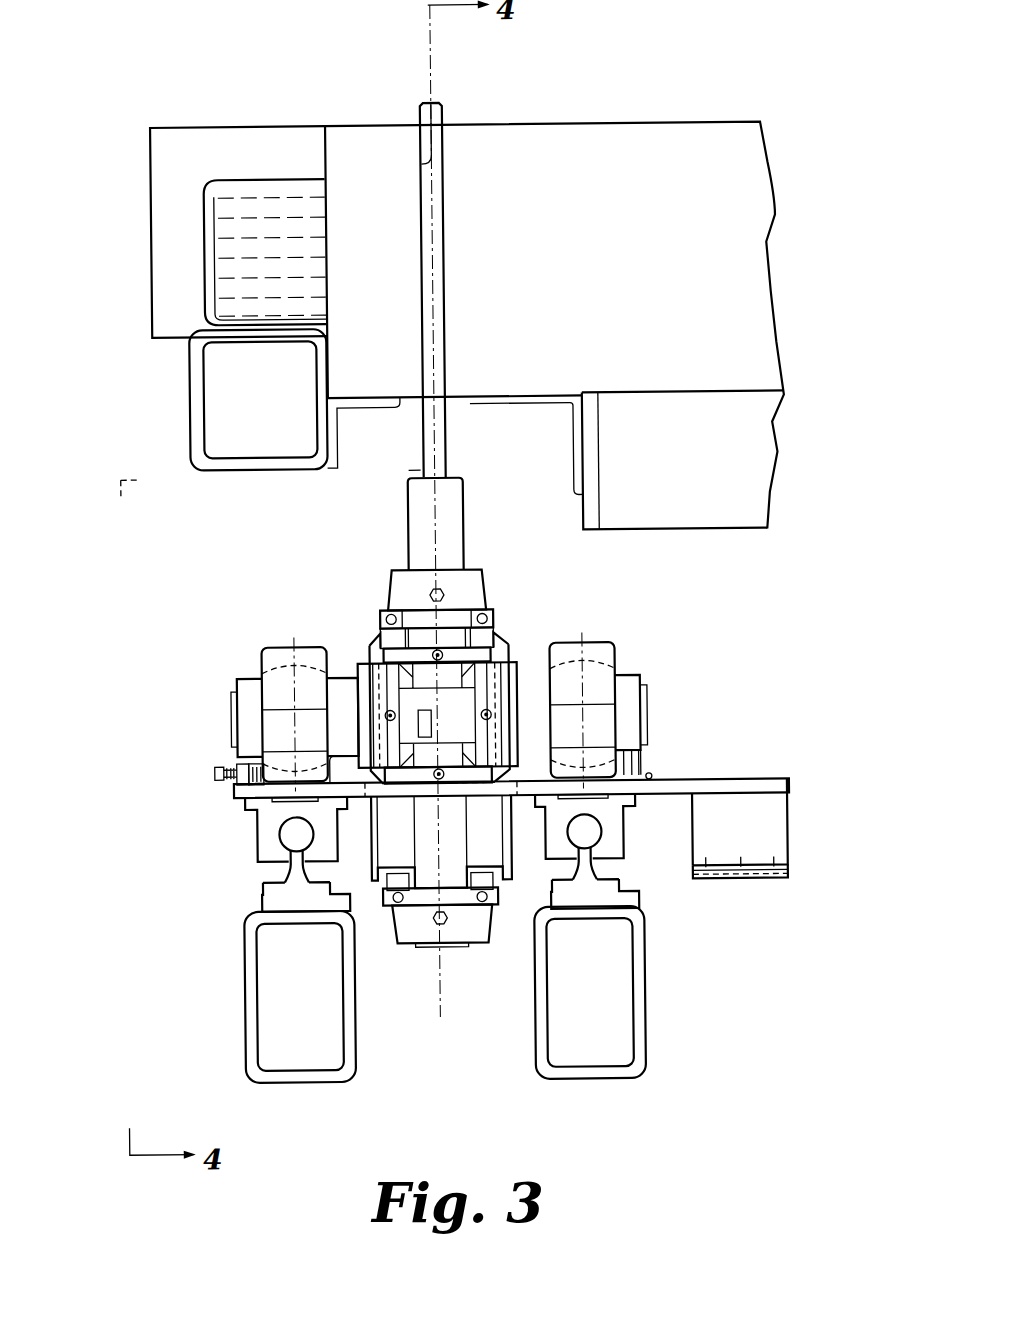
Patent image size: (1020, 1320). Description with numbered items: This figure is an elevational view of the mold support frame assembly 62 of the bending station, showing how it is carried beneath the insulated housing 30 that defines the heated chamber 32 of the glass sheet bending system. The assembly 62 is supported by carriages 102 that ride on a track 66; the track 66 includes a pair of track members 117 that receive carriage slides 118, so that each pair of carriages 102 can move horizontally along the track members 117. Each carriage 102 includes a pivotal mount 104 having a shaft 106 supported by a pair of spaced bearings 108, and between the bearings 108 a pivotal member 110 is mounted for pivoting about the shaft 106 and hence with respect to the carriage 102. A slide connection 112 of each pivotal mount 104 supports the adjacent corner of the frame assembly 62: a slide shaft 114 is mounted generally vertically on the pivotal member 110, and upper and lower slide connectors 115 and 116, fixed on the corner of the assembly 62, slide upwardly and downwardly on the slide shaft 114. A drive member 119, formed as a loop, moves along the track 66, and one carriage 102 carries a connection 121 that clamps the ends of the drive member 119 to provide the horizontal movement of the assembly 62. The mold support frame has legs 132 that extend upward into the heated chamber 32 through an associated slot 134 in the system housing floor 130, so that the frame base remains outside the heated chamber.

The insulated housing 30 is at (156, 246).
The heated chamber 32 is at (663, 123).
The mold support frame assembly 62 is at (370, 515).
The track 66 is at (278, 844).
The carriage 102 is at (216, 789).
The pivotal mount 104 is at (518, 636).
The shaft 106 is at (356, 672).
The bearings 108 is at (258, 668).
The pivotal member 110 is at (498, 632).
The slide connection 112 is at (486, 558).
The slide shaft 114 is at (455, 507).
The upper slide connector 115 is at (405, 590).
The lower slide connector 116 is at (486, 923).
The track members 117 is at (287, 836).
The carriage slides 118 is at (268, 815).
The drive member 119 is at (788, 874).
The connection 121 is at (780, 882).
The system housing floor 130 is at (757, 251).
The legs 132 is at (447, 204).
The slot 134 is at (432, 160).